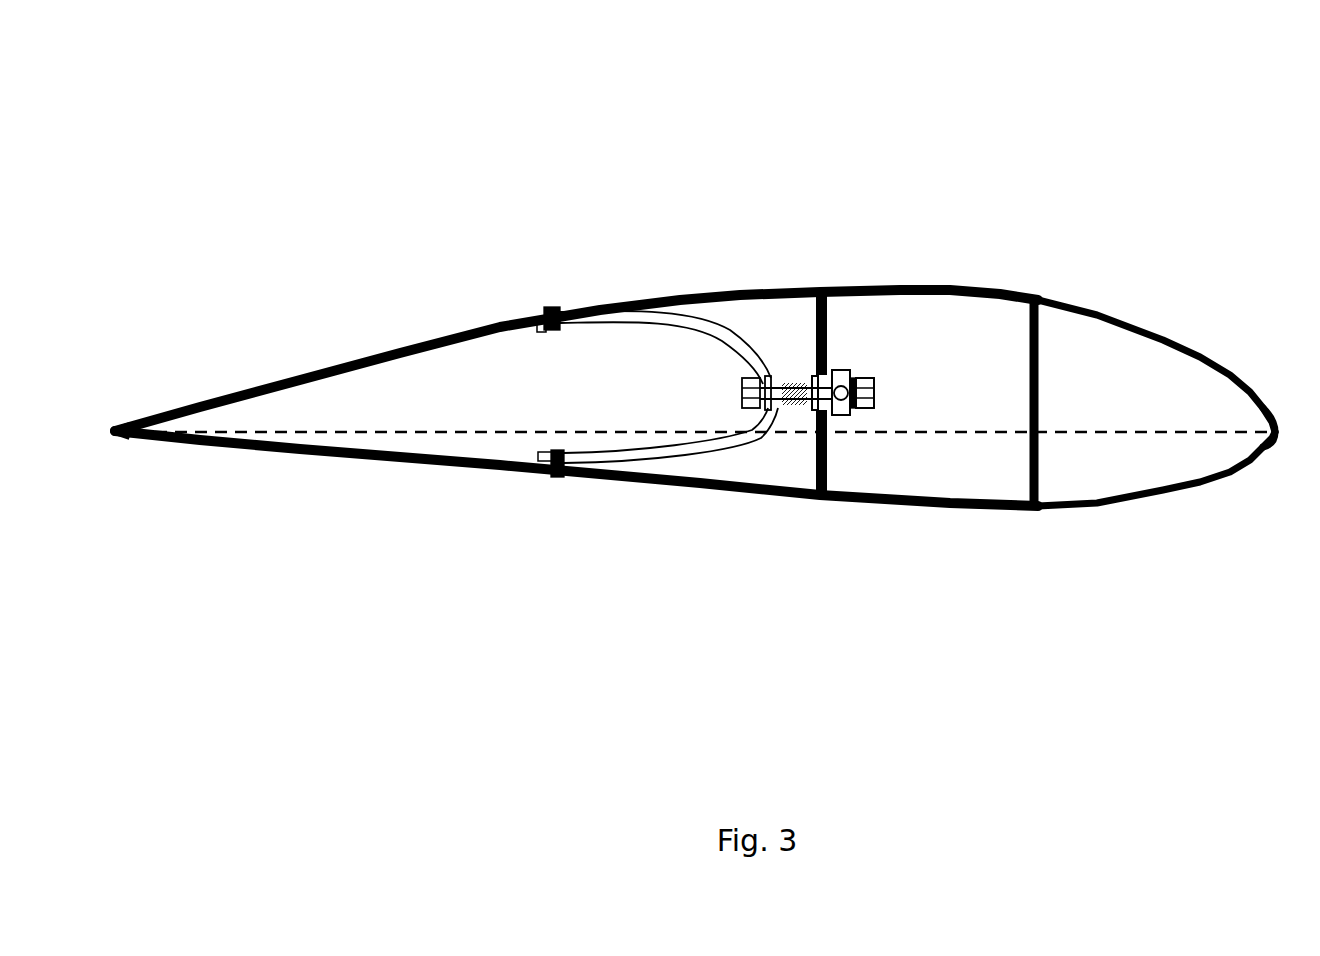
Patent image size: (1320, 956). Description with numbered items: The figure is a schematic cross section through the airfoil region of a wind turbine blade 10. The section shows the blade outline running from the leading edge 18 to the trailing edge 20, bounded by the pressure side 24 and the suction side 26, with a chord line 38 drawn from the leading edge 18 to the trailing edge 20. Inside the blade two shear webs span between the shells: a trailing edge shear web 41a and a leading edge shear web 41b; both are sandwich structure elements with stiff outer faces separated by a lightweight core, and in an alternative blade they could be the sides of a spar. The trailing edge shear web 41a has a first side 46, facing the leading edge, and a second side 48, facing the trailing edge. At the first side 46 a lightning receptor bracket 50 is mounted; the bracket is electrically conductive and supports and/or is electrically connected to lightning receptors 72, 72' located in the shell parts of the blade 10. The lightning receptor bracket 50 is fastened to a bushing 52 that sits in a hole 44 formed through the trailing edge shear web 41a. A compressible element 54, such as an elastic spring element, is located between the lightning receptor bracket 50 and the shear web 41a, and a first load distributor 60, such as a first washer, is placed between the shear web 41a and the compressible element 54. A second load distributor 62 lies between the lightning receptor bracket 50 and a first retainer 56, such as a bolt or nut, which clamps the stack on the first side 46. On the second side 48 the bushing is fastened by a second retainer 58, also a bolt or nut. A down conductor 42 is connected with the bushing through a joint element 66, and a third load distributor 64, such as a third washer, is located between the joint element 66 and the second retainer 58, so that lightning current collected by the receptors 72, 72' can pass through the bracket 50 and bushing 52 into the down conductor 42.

The wind turbine blade 10 is at (606, 115).
The leading edge 18 is at (1273, 421).
The trailing edge 20 is at (115, 430).
The pressure side 24 is at (1051, 513).
The suction side 26 is at (1076, 305).
The chord line 38 is at (1238, 432).
The trailing edge shear web 41a is at (827, 497).
The leading edge shear web 41b is at (1038, 455).
The down conductor 42 is at (841, 416).
The hole 44 is at (818, 381).
The first side 46 is at (808, 457).
The second side 48 is at (836, 328).
The lightning receptor bracket 50 is at (660, 458).
The bushing 52 is at (782, 410).
The compressible element 54 is at (802, 382).
The first retainer 56 is at (742, 390).
The second retainer 58 is at (873, 383).
The first load distributor 60 is at (814, 410).
The second load distributor 62 is at (773, 408).
The third load distributor 64 is at (857, 409).
The joint element 66 is at (845, 377).
The lightning receptor 72 is at (537, 278).
The lightning receptor 72' is at (517, 508).